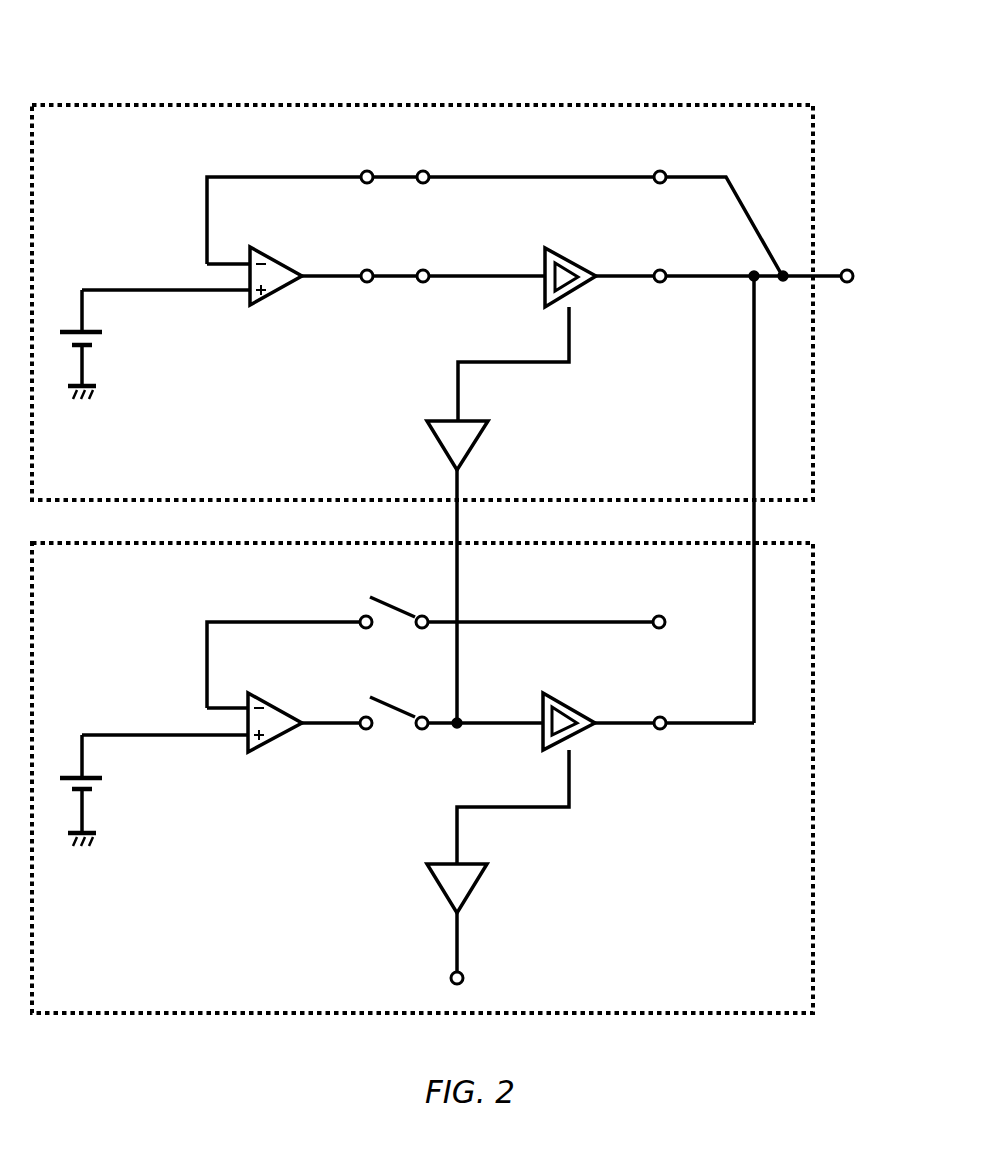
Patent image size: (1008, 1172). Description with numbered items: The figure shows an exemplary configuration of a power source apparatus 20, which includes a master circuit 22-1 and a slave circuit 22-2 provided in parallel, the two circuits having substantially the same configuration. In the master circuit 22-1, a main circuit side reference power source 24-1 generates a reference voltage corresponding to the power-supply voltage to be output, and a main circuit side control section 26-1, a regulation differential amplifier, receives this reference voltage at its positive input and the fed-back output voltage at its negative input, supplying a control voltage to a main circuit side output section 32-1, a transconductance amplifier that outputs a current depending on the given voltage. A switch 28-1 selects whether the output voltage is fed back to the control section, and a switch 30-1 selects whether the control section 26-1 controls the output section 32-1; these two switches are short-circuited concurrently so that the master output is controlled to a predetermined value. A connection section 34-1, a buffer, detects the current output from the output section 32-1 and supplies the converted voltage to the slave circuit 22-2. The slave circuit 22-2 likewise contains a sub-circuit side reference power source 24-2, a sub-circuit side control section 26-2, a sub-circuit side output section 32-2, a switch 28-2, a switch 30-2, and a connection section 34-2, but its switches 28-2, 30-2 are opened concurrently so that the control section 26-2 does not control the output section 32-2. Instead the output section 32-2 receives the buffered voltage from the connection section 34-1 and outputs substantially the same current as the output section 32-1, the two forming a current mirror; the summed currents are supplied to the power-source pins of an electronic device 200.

The power source apparatus 20 is at (808, 49).
The master circuit 22-1 is at (815, 440).
The slave circuit 22-2 is at (815, 953).
The main circuit side reference power source 24-1 is at (97, 327).
The sub-circuit side reference power source 24-2 is at (97, 773).
The main circuit side control section 26-1 is at (299, 242).
The sub-circuit side control section 26-2 is at (299, 690).
The switch 28-1 is at (447, 150).
The switch 28-2 is at (362, 616).
The switch 30-1 is at (447, 250).
The switch 30-2 is at (366, 730).
The main circuit side output section 32-1 is at (594, 245).
The sub-circuit side output section 32-2 is at (592, 688).
The connection section 34-1 is at (471, 446).
The connection section 34-2 is at (471, 890).
The electronic device 200 is at (748, 280).